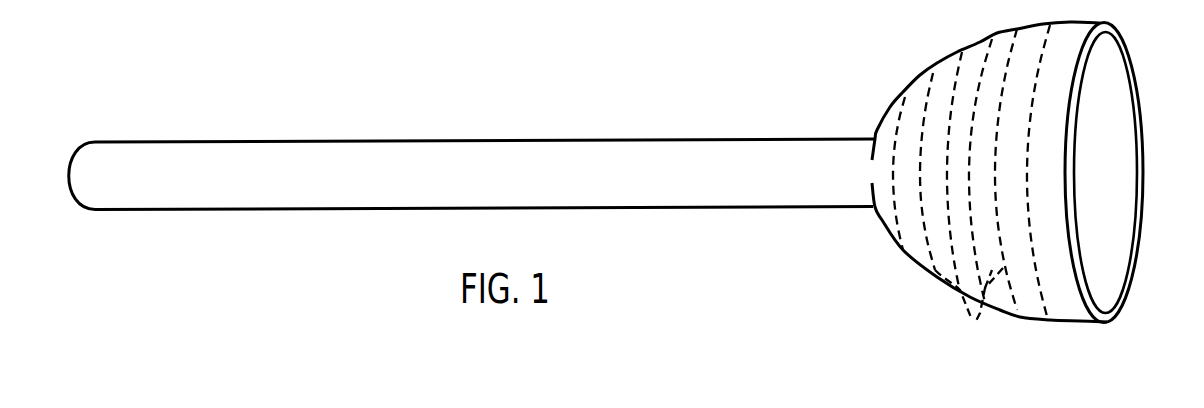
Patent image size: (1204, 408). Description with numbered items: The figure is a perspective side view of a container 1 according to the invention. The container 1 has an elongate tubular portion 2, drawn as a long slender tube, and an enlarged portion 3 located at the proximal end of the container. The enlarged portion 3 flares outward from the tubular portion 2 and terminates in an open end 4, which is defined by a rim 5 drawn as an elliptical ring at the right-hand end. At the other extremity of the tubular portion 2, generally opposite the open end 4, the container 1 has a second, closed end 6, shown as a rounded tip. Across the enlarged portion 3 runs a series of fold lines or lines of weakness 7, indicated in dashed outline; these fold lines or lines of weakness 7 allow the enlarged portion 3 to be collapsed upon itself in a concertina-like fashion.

The container 1 is at (175, 143).
The elongate tubular portion 2 is at (466, 177).
The enlarged portion 3 is at (921, 78).
The open end 4 is at (1090, 271).
The rim 5 is at (1123, 298).
The closed end 6 is at (95, 160).
The fold lines or lines of weakness 7 is at (977, 324).